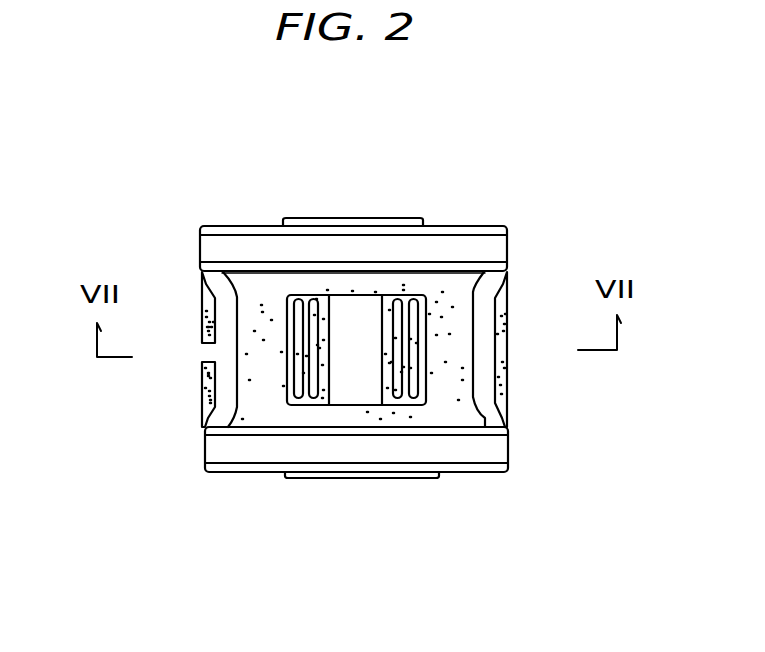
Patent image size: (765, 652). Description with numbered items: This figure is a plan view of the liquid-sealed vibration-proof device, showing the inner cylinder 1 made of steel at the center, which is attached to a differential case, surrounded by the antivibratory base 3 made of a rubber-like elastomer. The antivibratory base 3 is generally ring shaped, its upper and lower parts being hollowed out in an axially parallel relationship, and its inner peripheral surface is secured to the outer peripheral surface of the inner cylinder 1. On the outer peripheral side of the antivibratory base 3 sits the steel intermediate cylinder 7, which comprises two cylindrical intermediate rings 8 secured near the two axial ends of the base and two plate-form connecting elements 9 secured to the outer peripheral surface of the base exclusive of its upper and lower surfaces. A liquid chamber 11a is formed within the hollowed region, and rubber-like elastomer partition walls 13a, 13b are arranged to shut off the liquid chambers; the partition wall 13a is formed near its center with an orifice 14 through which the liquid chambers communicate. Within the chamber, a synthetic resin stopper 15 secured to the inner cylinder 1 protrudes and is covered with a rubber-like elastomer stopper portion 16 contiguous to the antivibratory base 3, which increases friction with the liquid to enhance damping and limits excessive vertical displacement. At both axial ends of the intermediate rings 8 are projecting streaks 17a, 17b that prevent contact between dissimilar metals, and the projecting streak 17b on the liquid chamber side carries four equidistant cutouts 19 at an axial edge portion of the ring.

The inner cylinder 1 is at (381, 217).
The antivibratory base 3 is at (438, 403).
The intermediate cylinder 7 is at (513, 274).
The intermediate ring 8 is at (458, 243).
The connecting element 9 is at (485, 373).
The liquid chamber 11a is at (270, 407).
The partition wall 13a is at (205, 385).
The partition wall 13b is at (505, 330).
The orifice 14 is at (205, 350).
The stopper 15 is at (352, 387).
The stopper portion 16 is at (302, 330).
The projecting streak 17a is at (483, 470).
The projecting streak 17b is at (505, 449).
The cutout 19 is at (243, 272).